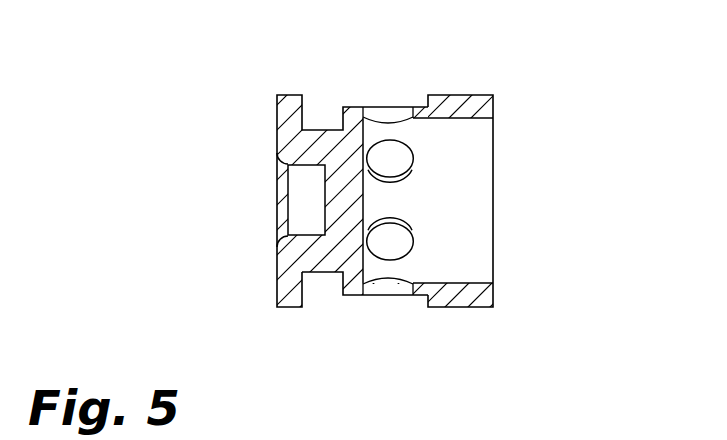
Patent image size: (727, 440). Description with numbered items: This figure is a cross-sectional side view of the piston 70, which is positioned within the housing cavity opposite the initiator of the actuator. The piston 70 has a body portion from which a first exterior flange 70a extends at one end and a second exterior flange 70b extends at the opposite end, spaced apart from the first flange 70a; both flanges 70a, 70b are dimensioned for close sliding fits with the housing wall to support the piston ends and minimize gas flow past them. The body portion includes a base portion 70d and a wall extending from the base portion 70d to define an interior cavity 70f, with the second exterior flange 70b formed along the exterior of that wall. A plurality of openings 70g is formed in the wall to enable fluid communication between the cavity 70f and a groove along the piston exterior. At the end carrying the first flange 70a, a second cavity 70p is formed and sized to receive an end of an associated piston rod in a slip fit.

The piston 70 is at (139, 240).
The first exterior flange 70a is at (285, 306).
The second exterior flange 70b is at (483, 96).
The base portion 70d is at (342, 157).
The interior cavity 70f is at (473, 190).
The opening 70g is at (413, 250).
The second cavity 70p is at (307, 208).